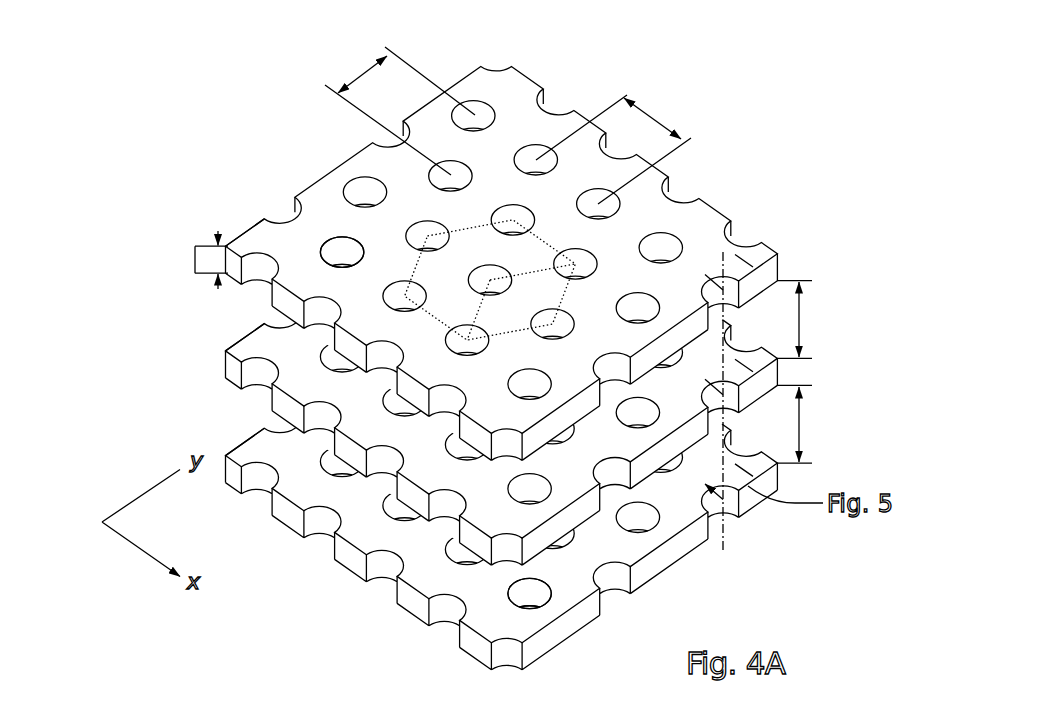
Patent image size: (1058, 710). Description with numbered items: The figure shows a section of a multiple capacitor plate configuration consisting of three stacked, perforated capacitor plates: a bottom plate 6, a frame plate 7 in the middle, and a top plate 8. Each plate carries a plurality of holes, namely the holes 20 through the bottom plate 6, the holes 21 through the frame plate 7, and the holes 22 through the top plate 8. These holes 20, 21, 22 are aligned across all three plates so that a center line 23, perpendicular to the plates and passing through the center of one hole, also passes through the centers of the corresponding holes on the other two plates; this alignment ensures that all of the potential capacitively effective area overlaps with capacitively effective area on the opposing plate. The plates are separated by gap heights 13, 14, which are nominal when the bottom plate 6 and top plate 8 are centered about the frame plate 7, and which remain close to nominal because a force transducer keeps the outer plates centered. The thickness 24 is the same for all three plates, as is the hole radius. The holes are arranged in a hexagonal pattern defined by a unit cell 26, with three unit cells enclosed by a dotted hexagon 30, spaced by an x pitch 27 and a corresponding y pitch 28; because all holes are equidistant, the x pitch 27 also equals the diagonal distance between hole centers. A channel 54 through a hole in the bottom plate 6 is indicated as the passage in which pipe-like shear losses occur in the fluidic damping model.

The bottom plate 6 is at (623, 558).
The frame plate 7 is at (229, 355).
The top plate 8 is at (693, 210).
The gap height 13 is at (804, 424).
The gap height 14 is at (804, 320).
The holes through the bottom plate 20 is at (310, 452).
The holes through the frame plate 21 is at (330, 357).
The holes through the top plate 22 is at (320, 253).
The center line 23 is at (729, 414).
The thickness 24 is at (211, 260).
The unit cell 26 is at (329, 238).
The x pitch 27 is at (613, 147).
The y pitch 28 is at (400, 111).
The hexagon 30 is at (455, 237).
The channel 54 is at (546, 606).